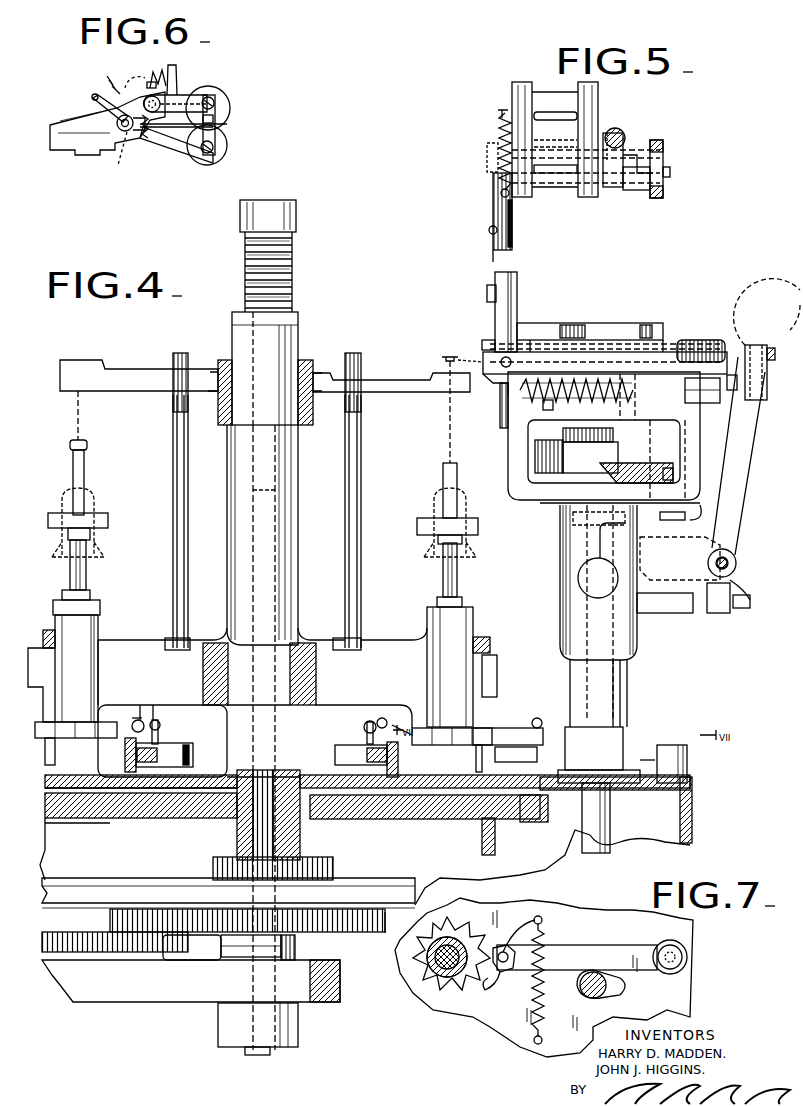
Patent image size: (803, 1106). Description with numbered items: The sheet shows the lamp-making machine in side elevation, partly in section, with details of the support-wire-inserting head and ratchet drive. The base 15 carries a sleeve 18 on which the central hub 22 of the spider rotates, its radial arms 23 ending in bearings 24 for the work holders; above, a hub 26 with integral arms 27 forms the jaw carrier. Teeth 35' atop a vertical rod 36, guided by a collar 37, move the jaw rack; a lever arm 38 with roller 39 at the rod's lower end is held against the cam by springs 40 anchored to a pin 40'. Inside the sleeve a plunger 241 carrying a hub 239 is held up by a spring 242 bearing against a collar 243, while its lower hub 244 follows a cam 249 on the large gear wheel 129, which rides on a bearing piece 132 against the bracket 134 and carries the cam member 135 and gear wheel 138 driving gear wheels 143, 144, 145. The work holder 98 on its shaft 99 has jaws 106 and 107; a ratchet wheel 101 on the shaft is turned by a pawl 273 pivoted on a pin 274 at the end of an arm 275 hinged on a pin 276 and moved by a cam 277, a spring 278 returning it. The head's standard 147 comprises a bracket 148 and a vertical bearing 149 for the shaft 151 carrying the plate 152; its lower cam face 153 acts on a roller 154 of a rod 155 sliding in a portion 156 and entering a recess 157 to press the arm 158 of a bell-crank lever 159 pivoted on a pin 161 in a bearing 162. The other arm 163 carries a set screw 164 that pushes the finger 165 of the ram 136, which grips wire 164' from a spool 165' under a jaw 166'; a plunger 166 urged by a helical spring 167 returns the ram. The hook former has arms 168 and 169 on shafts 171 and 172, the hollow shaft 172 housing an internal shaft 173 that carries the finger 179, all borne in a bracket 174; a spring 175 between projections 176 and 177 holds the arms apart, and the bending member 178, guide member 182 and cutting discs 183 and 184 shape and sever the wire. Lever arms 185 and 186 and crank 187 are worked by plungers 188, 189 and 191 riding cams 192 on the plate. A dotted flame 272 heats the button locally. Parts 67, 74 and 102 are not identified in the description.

In FIG. 4, the base 15 is at (692, 808).
In FIG. 7, the base 15 is at (693, 995).
In FIG. 4, the sleeve 18 is at (300, 830).
In FIG. 4, the central hub 22 is at (298, 565).
In FIG. 4, the radially extending arms 23 is at (427, 643).
In FIG. 4, the hubs or bearings 24 is at (473, 712).
In FIG. 7, the hubs or bearings 24 is at (455, 975).
In FIG. 4, the hub 26 is at (313, 425).
In FIG. 4, the arms 27 is at (265, 376).
In FIG. 4, the teeth 35' is at (283, 381).
In FIG. 4, the vertical rod 36 is at (361, 482).
In FIG. 4, the collar 37 is at (190, 640).
In FIG. 4, the lever arm 38 is at (193, 755).
In FIG. 4, the roller 39 is at (137, 755).
In FIG. 4, the springs 40 is at (259, 711).
In FIG. 4, the pin 40' is at (258, 728).
In FIG. 4, the valve body 67 is at (55, 625).
In FIG. 4, the pipe 74 is at (40, 687).
In FIG. 4, the work holder 98 is at (264, 522).
In FIG. 7, the shaft 99 is at (432, 982).
In FIG. 4, the ratchet wheel 101 is at (85, 738).
In FIG. 7, the ratchet wheel 101 is at (454, 975).
In FIG. 4, the stem 102 is at (476, 760).
In FIG. 4, the jaw 106 is at (457, 478).
In FIG. 4, the jaw 107 is at (84, 470).
In FIG. 4, the large gear wheel 129 is at (540, 822).
In FIG. 4, the annular bearing piece 132 is at (295, 948).
In FIG. 4, the cross piece or bracket 134 is at (340, 982).
In FIG. 4, the cam member 135 is at (392, 878).
In FIG. 4, the ram 136 is at (560, 352).
In FIG. 4, the gear wheel 138 is at (360, 940).
In FIG. 4, the gear wheel 143 is at (118, 908).
In FIG. 4, the gear wheel 144 is at (193, 950).
In FIG. 4, the gear wheel 145 is at (60, 935).
In FIG. 4, the standard 147 is at (560, 642).
In FIG. 4, the bracket 148 is at (543, 490).
In FIG. 4, the vertical bearing 149 is at (627, 690).
In FIG. 4, the shaft 151 is at (627, 714).
In FIG. 7, the shaft 151 is at (595, 998).
In FIG. 4, the plate 152 is at (576, 456).
In FIG. 4, the cam face 153 is at (625, 485).
In FIG. 4, the roller 154 is at (673, 472).
In FIG. 4, the vertical reciprocal rod 155 is at (685, 520).
In FIG. 4, the portion of the standard 156 is at (708, 506).
In FIG. 4, the recess 157 is at (665, 603).
In FIG. 4, the arm 158 is at (680, 559).
In FIG. 4, the bell-crank lever 159 is at (736, 560).
In FIG. 4, the pin 161 is at (728, 566).
In FIG. 4, the bearing 162 is at (750, 600).
In FIG. 4, the arm 163 is at (738, 456).
In FIG. 4, the set screw 164 is at (759, 364).
In FIG. 4, the wire 164' is at (450, 401).
In FIG. 4, the depending finger 165 is at (722, 399).
In FIG. 4, the spool 165' is at (767, 302).
In FIG. 4, the spring-actuated plunger 166 is at (701, 360).
In FIG. 4, the jaw 166' is at (537, 333).
In FIG. 4, the helical spring 167 is at (543, 405).
In FIG. 6, the oscillatory arm 168 is at (190, 98).
In FIG. 5, the oscillatory arm 168 is at (512, 218).
In FIG. 6, the oscillatory arm 169 is at (180, 152).
In FIG. 6, the shaft 171 is at (133, 82).
In FIG. 5, the shaft 171 is at (612, 187).
In FIG. 4, the shaft 171 is at (622, 323).
In FIG. 6, the hollow shaft 172 is at (113, 156).
In FIG. 5, the hollow shaft 172 is at (606, 130).
In FIG. 6, the internal shaft 173 is at (128, 130).
In FIG. 5, the internal shaft 173 is at (487, 153).
In FIG. 6, the bracket 174 is at (80, 148).
In FIG. 5, the bracket 174 is at (553, 93).
In FIG. 6, the helical spring 175 is at (110, 80).
In FIG. 5, the helical spring 175 is at (498, 130).
In FIG. 6, the projection 176 is at (177, 73).
In FIG. 5, the projection 176 is at (501, 196).
In FIG. 6, the projection 177 is at (93, 100).
In FIG. 5, the projection 177 is at (498, 112).
In FIG. 6, the member 178 is at (215, 120).
In FIG. 5, the member 178 is at (490, 232).
In FIG. 4, the member 178 is at (487, 300).
In FIG. 6, the finger 179 is at (227, 126).
In FIG. 5, the finger 179 is at (493, 256).
In FIG. 4, the finger 179 is at (482, 342).
In FIG. 6, the guide member 182 is at (213, 148).
In FIG. 4, the guide member 182 is at (500, 422).
In FIG. 6, the disc 183 is at (230, 97).
In FIG. 5, the disc 183 is at (512, 240).
In FIG. 4, the disc 183 is at (517, 278).
In FIG. 6, the disc 184 is at (220, 160).
In FIG. 5, the lever arm 185 is at (663, 152).
In FIG. 5, the lever arm 186 is at (622, 132).
In FIG. 5, the crank 187 is at (670, 172).
In FIG. 4, the vertical plunger 188 is at (685, 405).
In FIG. 4, the vertical plunger 189 is at (700, 394).
In FIG. 4, the vertical plunger 191 is at (576, 383).
In FIG. 4, the undulations or cams 192 is at (590, 435).
In FIG. 4, the hub 239 is at (296, 214).
In FIG. 4, the plunger 241 is at (253, 490).
In FIG. 4, the spring 242 is at (292, 262).
In FIG. 4, the collar 243 is at (298, 320).
In FIG. 4, the hub 244 is at (298, 1030).
In FIG. 4, the cam 249 is at (483, 855).
In FIG. 4, the flame 272 is at (490, 380).
In FIG. 4, the pawl 273 is at (518, 728).
In FIG. 7, the pawl 273 is at (497, 975).
In FIG. 4, the pin 274 is at (512, 762).
In FIG. 7, the pin 274 is at (515, 930).
In FIG. 4, the arm 275 is at (630, 760).
In FIG. 7, the arm 275 is at (570, 953).
In FIG. 4, the pin 276 is at (687, 752).
In FIG. 7, the pin 276 is at (687, 957).
In FIG. 7, the cam 277 is at (612, 995).
In FIG. 4, the spring 278 is at (552, 717).
In FIG. 7, the spring 278 is at (545, 986).